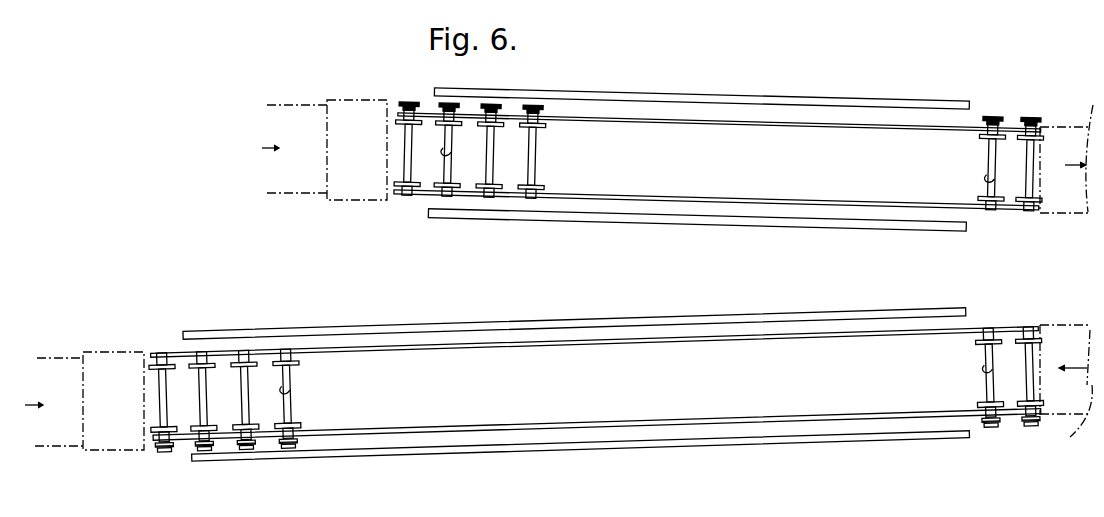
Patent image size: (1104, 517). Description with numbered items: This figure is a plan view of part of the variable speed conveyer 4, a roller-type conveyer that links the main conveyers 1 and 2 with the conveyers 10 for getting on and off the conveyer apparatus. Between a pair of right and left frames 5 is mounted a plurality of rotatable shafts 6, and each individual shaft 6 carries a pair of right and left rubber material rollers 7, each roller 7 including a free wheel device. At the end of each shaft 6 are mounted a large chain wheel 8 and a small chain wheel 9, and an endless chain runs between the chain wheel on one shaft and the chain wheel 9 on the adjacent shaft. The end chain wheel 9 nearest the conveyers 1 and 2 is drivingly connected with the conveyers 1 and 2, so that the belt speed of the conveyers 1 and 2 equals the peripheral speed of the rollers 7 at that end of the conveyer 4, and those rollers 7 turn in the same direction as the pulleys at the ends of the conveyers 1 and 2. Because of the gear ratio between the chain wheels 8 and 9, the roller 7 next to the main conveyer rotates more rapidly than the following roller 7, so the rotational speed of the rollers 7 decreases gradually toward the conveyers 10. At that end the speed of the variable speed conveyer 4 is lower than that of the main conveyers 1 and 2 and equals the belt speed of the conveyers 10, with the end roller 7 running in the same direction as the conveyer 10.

The main conveyer 1 is at (64, 378).
The main conveyer 2 is at (299, 163).
The variable speed conveyer 4 is at (684, 107).
The frames 5 is at (520, 348).
The rotatable shafts 6 is at (530, 152).
The rubber material rollers 7 is at (505, 222).
The large chain wheel 8 is at (999, 126).
The small chain wheel 9 is at (987, 122).
The conveyers for getting on and off 10 is at (1072, 276).